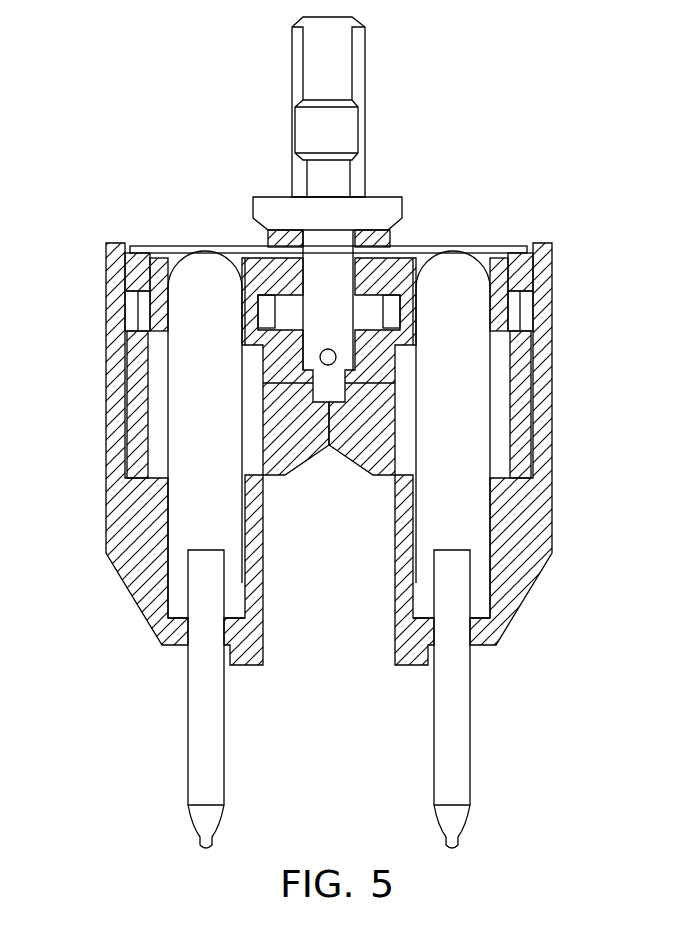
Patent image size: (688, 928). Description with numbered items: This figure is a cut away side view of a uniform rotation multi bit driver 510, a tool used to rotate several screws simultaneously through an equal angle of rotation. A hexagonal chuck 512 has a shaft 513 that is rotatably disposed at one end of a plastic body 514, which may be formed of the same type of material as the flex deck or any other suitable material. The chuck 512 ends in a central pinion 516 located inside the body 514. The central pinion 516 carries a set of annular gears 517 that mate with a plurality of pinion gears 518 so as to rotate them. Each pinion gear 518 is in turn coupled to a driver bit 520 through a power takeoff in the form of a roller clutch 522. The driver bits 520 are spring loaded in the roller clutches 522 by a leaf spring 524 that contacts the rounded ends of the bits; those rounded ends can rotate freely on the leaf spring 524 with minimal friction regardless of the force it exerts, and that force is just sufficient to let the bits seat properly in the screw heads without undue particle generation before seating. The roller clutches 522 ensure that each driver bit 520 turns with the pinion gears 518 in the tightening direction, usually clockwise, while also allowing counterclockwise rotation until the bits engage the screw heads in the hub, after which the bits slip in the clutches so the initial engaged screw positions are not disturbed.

The multi bit driver 510 is at (490, 118).
The hexagonal chuck 512 is at (366, 64).
The shaft 513 is at (313, 278).
The plastic body 514 is at (553, 450).
The central pinion 516 is at (365, 312).
The annular gears 517 is at (388, 322).
The pinion gears 518 is at (137, 310).
The driver bit 520 is at (224, 722).
The roller clutch 522 is at (150, 392).
The leaf spring 524 is at (527, 247).